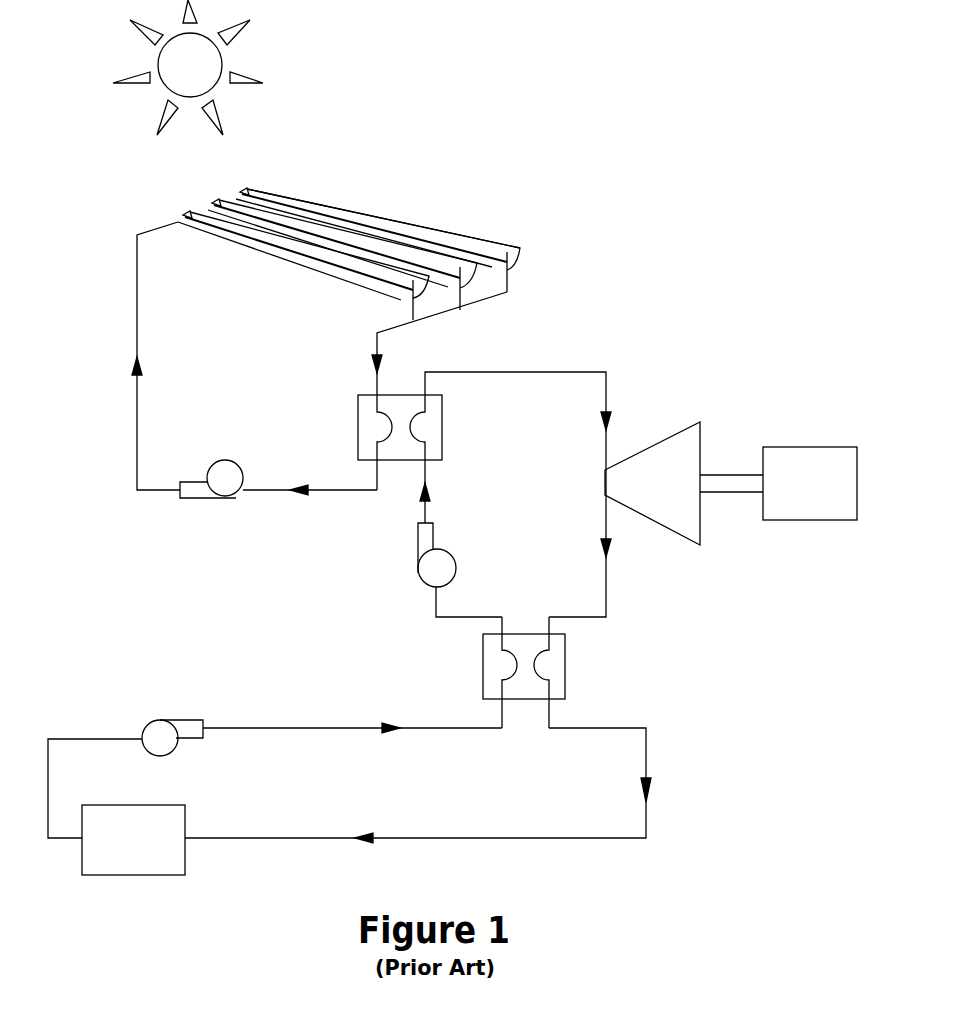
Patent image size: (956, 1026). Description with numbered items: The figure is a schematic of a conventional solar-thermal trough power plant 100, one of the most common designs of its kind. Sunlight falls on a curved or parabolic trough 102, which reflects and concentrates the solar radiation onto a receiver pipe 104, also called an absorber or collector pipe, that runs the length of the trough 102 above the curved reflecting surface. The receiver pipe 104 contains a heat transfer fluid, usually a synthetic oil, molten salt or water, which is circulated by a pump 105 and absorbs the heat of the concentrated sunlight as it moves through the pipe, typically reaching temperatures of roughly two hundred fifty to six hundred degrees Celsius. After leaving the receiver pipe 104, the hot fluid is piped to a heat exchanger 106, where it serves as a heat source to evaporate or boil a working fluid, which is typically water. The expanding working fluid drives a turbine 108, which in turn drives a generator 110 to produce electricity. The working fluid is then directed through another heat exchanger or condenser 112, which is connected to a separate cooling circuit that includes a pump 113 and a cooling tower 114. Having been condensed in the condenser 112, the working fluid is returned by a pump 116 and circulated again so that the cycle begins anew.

The trough power plant 100 is at (549, 128).
The parabolic trough 102 is at (520, 250).
The receiver pipe 104 is at (410, 232).
The pump 105 is at (217, 500).
The heat exchanger 106 is at (400, 462).
The turbine 108 is at (660, 465).
The generator 110 is at (797, 497).
The condenser 112 is at (567, 665).
The pump 113 is at (165, 718).
The cooling tower 114 is at (155, 842).
The pump 116 is at (417, 572).